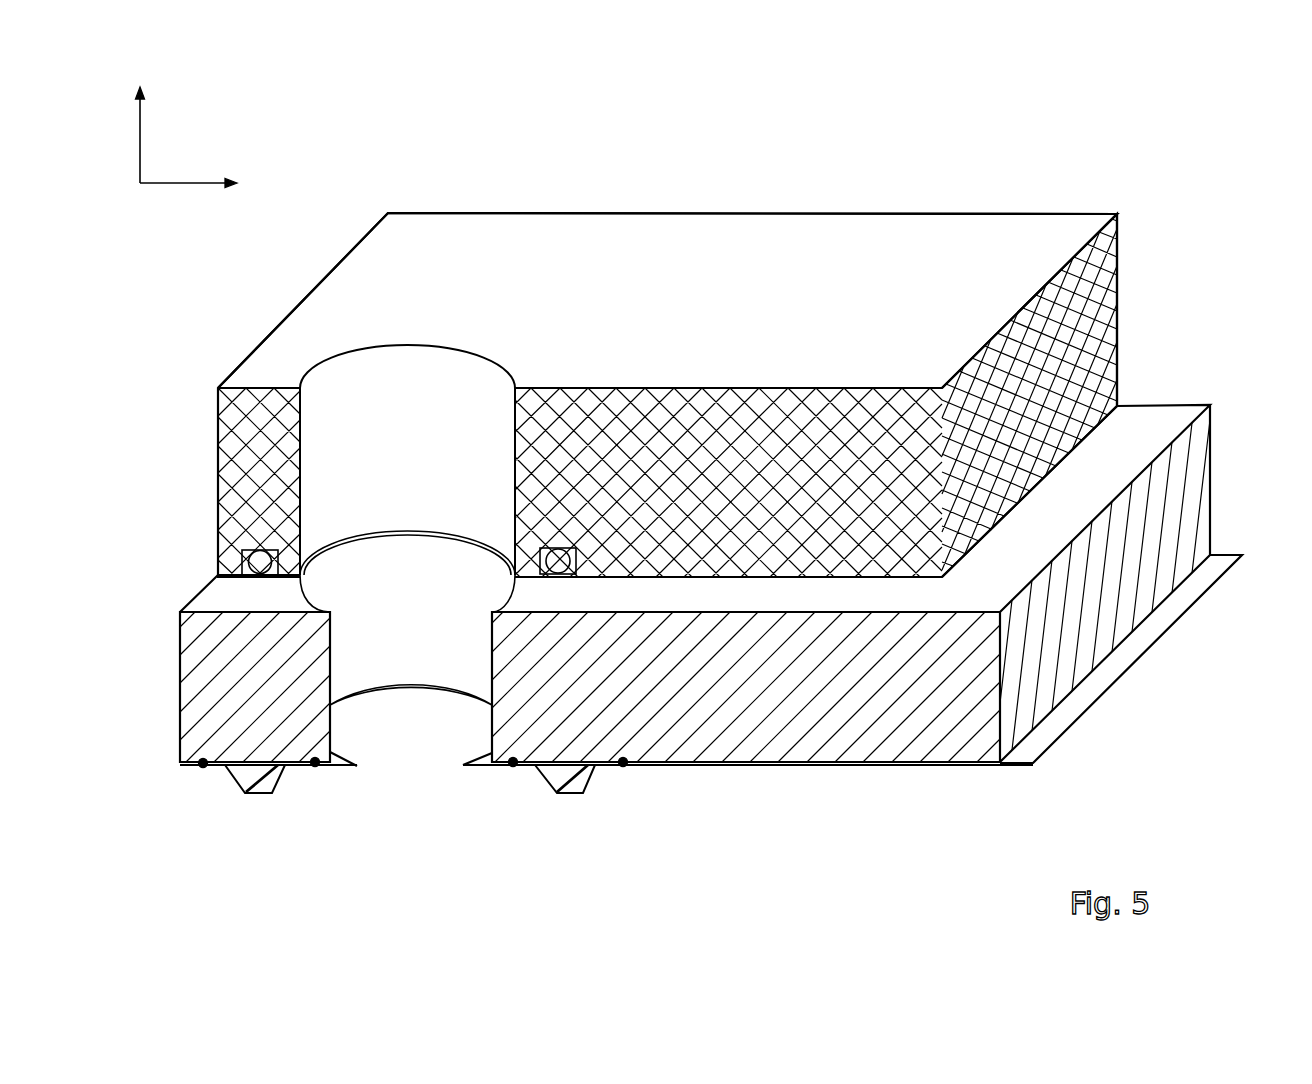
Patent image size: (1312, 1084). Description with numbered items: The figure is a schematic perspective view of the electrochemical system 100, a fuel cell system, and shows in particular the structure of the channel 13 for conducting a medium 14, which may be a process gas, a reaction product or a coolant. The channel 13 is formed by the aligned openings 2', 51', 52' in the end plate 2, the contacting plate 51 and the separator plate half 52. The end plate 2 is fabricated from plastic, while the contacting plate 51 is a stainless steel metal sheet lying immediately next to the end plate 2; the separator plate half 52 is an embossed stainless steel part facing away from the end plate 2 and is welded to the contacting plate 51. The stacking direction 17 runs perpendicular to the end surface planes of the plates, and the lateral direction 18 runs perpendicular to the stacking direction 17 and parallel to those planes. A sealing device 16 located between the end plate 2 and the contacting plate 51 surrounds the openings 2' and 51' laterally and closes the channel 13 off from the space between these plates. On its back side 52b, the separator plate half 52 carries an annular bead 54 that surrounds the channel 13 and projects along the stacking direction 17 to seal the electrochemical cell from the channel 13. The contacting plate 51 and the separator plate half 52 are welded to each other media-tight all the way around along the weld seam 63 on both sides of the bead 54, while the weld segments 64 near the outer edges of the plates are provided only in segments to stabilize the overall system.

The end plate 2 is at (667, 364).
The opening in the end plate 2' is at (407, 337).
The channel 13 is at (430, 378).
The medium 14 is at (392, 592).
The sealing device 16 is at (252, 578).
The stacking direction 17 is at (140, 147).
The lateral direction 18 is at (192, 183).
The contacting plate 51 is at (731, 572).
The opening in the contacting plate 51' is at (407, 553).
The separator plate half 52 is at (786, 666).
The opening in the separator plate half 52' is at (411, 768).
The back side of the separator plate half 52b is at (852, 766).
The annular bead 54 is at (518, 850).
The weld seam 63 is at (494, 800).
The weld segments 64 is at (623, 766).
The electrochemical system 100 is at (1165, 243).